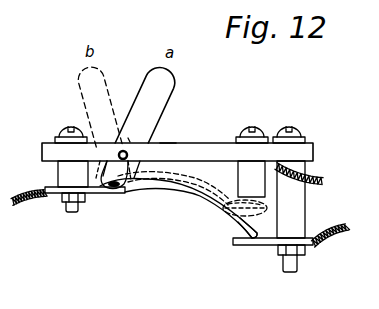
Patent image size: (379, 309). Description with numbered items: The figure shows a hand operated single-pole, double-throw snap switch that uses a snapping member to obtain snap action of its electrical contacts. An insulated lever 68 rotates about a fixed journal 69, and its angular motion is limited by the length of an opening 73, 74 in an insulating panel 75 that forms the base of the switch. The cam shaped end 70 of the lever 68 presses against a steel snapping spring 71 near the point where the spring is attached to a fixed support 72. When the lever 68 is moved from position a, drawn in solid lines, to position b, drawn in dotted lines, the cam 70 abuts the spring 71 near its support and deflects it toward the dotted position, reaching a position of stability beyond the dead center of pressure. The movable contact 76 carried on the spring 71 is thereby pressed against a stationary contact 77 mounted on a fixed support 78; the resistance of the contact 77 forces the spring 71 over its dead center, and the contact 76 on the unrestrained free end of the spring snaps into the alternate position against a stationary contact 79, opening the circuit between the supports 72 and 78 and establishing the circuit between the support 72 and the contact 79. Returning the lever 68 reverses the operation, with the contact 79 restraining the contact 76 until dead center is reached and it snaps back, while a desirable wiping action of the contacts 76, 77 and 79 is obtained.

The insulated lever 68 is at (175, 88).
The fixed journal 69 is at (128, 138).
The cam shaped end 70 is at (100, 190).
The steel snapping spring 71 is at (192, 212).
The fixed support 72 is at (57, 174).
The opening end 73 is at (97, 143).
The opening end 74 is at (168, 143).
The insulating panel 75 is at (316, 147).
The movable contact 76 is at (233, 228).
The stationary contact 77 is at (248, 245).
The fixed support 78 is at (306, 207).
The stationary contact 79 is at (240, 186).